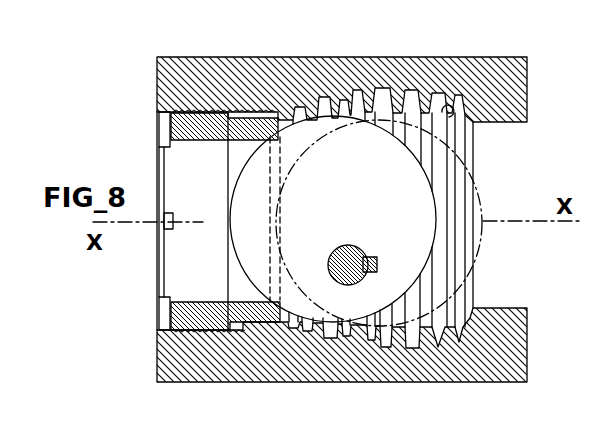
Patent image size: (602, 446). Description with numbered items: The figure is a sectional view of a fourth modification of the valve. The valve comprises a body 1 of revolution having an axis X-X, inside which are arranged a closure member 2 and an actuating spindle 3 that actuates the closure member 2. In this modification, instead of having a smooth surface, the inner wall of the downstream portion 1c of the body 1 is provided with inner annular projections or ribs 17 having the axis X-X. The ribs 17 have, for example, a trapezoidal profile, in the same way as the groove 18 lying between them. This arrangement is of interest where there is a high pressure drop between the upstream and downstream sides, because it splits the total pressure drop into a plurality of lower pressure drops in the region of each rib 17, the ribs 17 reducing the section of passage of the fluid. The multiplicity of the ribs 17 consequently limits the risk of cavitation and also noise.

The body 1 is at (530, 92).
The downstream portion of the body 1c is at (433, 107).
The closure member 2 is at (356, 221).
The actuating spindle 3 is at (357, 249).
The inner annular projections or ribs 17 is at (446, 115).
The groove 18 is at (372, 90).